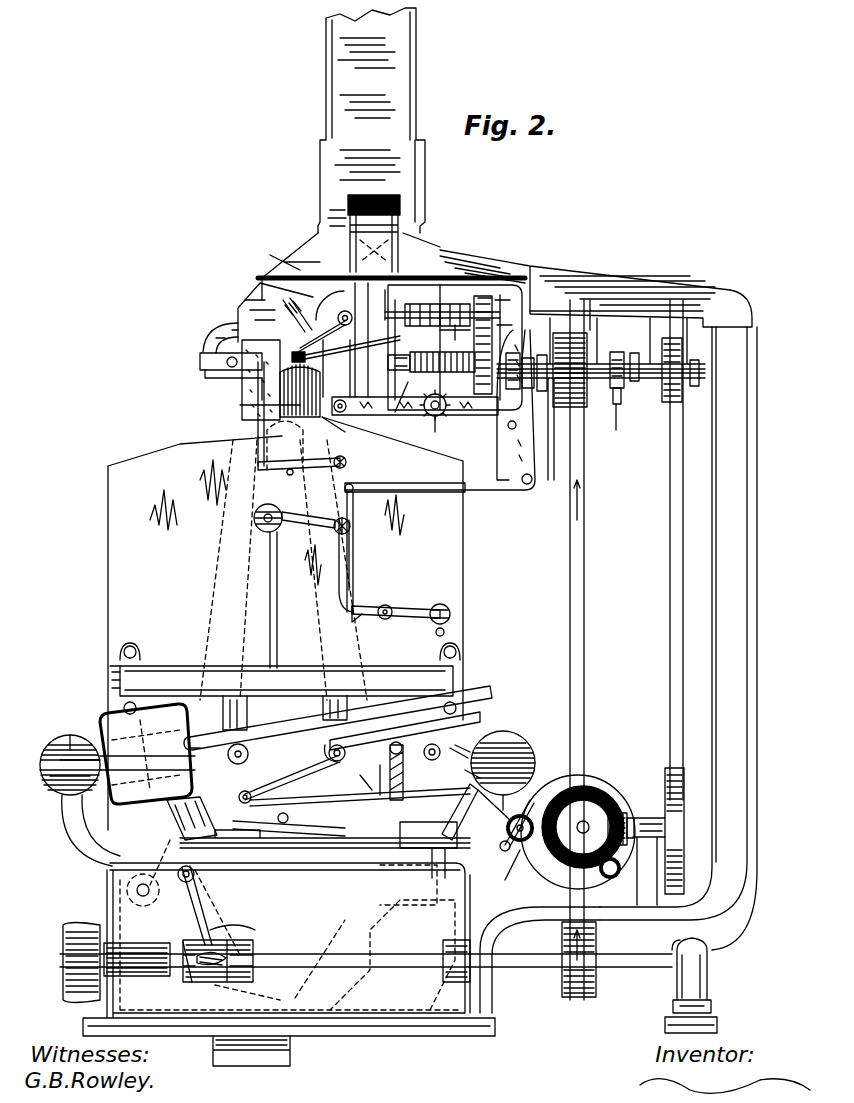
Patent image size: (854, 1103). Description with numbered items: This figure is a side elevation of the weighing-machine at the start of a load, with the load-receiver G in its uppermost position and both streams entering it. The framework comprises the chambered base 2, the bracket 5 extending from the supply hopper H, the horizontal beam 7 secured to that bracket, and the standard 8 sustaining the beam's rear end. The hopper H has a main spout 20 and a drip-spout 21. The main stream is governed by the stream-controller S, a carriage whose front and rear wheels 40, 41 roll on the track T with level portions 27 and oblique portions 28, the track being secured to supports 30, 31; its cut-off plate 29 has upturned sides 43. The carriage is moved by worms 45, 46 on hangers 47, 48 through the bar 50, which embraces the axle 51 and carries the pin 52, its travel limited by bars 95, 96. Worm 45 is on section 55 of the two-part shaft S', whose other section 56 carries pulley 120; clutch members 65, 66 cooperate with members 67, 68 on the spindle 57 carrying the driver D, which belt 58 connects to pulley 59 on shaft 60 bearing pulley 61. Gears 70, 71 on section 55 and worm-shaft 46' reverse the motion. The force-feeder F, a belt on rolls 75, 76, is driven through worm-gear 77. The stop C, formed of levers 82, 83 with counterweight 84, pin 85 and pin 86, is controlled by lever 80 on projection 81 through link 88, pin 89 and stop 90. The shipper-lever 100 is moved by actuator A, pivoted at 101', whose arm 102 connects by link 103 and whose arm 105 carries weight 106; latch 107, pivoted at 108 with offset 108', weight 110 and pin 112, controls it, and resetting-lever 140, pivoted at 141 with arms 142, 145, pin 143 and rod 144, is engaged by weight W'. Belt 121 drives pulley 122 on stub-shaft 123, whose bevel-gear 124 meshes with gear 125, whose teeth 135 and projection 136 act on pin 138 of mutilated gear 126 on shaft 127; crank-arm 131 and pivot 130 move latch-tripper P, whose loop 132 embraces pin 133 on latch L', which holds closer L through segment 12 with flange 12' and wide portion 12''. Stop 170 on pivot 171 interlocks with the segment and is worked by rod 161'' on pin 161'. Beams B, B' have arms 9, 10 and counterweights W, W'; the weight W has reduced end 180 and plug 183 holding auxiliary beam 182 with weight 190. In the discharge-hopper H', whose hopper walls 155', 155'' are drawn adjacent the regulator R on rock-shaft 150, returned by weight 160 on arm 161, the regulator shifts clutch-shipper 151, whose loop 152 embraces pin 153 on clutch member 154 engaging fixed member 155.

The supply hopper or chute H is at (356, 120).
The bracket 5 is at (350, 215).
The vertical flanges or upturned sides 43 is at (328, 272).
The rear rollers or wheels 41 is at (420, 230).
The horizontally-disposed beam 7 is at (555, 272).
The cut-off plate 29 is at (312, 288).
The upright or standard 8 is at (618, 670).
The belt 58 is at (584, 592).
The longitudinally-reciprocative spindle 57 is at (588, 392).
The second pulley 59 is at (566, 990).
The clutch member 65 is at (513, 352).
The upper worm-shaft 46' is at (564, 315).
The clutch member 67 is at (545, 345).
The clutch member 66 is at (634, 353).
The two-part shaft S' is at (624, 382).
The pulley 120 is at (665, 400).
The clutch member 68 is at (623, 414).
The shaft-section 56 is at (696, 388).
The belt 121 is at (670, 650).
The pulley 122 is at (684, 768).
The inwardly-extending pin 52 is at (505, 280).
The longitudinal bar or coupling-rod 50 is at (425, 308).
The worm 45 is at (448, 352).
The shaft-section 55 is at (395, 375).
The gear 70 is at (492, 392).
The worm 46 is at (499, 254).
The hanger 47 is at (440, 300).
The bar 95 is at (458, 322).
The laterally-extending pin 86 is at (385, 290).
The gear 71 is at (497, 296).
The hanger 48 is at (505, 312).
The force-feeder F is at (415, 419).
The roll 76 is at (446, 414).
The worm-gear 77 is at (441, 431).
The bar 96 is at (408, 412).
The roll 75 is at (335, 431).
The drip-spout 21 is at (355, 366).
The oblique track portions 28 is at (338, 300).
The counterweight 84 is at (325, 345).
The auxiliary lever 83 is at (347, 348).
The pin or stop 85 is at (312, 366).
The main spout 20 is at (252, 302).
The stream-controller S is at (246, 328).
The support 31 is at (230, 328).
The support 30 is at (214, 334).
The stop C is at (230, 360).
The horizontal track portions 27 is at (228, 364).
The track T is at (225, 372).
The main or supporting lever 82 is at (245, 385).
The front rollers or wheels 40 is at (265, 375).
The axle 51 is at (258, 395).
The load-receiver G is at (285, 623).
The gravity-lever 80 is at (278, 455).
The link 88 is at (258, 441).
The pin 89 is at (258, 465).
The projection 81 is at (346, 462).
The stop or pin 90 is at (289, 474).
The shipper-lever 100 is at (525, 460).
The driver D is at (569, 379).
The link 103 is at (442, 492).
The upper arm 102 is at (353, 502).
The actuator A is at (353, 565).
The pivot 101' is at (328, 540).
The horizontal arm 105 is at (305, 525).
The weight 106 is at (258, 522).
The rod 144 is at (277, 620).
The latch 107 is at (372, 606).
The pivot 108 is at (393, 622).
The beveled offset 108' is at (346, 624).
The weight 110 is at (450, 612).
The pin 112 is at (444, 632).
The counterweight of beam B W is at (65, 756).
The plug 183 is at (70, 735).
The auxiliary beam 182 is at (45, 762).
The reduced end 180 is at (55, 782).
The weight 160 is at (110, 873).
The weight 190 is at (146, 754).
The arms of beam B 9 is at (244, 746).
The supporting-beam B is at (202, 732).
The arms of beam B' 10 is at (412, 738).
The supporting-beam B' is at (352, 751).
The stop 170 is at (292, 778).
The pivot 171 is at (246, 790).
The wide portion 12'' is at (352, 780).
The flange or auxiliary stop 12' is at (377, 780).
The segment 12 is at (360, 800).
The forward arm 142 is at (289, 827).
The pin 143 is at (278, 818).
The closer L is at (325, 836).
The rod 161'' is at (168, 818).
The pin 161' is at (137, 869).
The forwardly-extending arm 161 is at (154, 877).
The latch L' is at (412, 778).
The latch-tripper P is at (470, 800).
The rear arm 145 is at (476, 812).
The resetting-lever 140 is at (428, 835).
The pivot 130 is at (498, 836).
The pivot 141 is at (438, 872).
The counterweight of beam B' W' is at (506, 757).
The crank-arm 131 is at (534, 760).
The longitudinal loop 132 is at (465, 750).
The pin 133 is at (440, 750).
The mutilated gear 126 is at (532, 798).
The pin 138 is at (552, 820).
The bevel-gear 125 is at (588, 786).
The projection 136 is at (545, 868).
The peripheral teeth 135 is at (620, 870).
The stub-shaft 123 is at (622, 812).
The bevel-gear 124 is at (632, 818).
The shaft 127 is at (504, 870).
The chambered base 2 is at (390, 1036).
The discharge-hopper H' is at (251, 1068).
The main shaft 60 is at (388, 967).
The main driver pulley 61 is at (66, 944).
The shiftable regulator R is at (225, 932).
The pin 153 is at (220, 968).
The loop 152 is at (186, 975).
The clutch-shipper 151 is at (200, 890).
The movable clutch member 154 is at (212, 910).
The rock-shaft 150 is at (180, 885).
The fixed clutch member 155 is at (252, 924).
The inclined wall 155' is at (323, 959).
The link 155'' is at (247, 999).